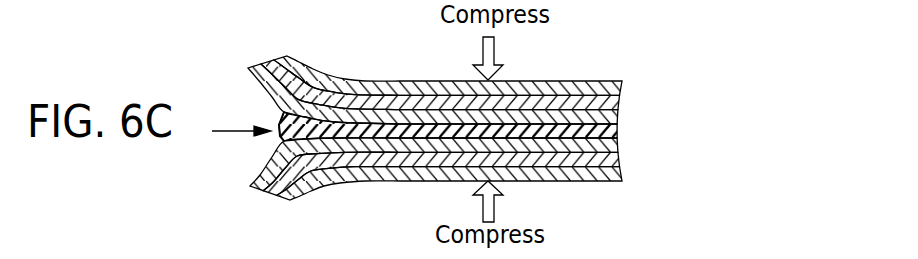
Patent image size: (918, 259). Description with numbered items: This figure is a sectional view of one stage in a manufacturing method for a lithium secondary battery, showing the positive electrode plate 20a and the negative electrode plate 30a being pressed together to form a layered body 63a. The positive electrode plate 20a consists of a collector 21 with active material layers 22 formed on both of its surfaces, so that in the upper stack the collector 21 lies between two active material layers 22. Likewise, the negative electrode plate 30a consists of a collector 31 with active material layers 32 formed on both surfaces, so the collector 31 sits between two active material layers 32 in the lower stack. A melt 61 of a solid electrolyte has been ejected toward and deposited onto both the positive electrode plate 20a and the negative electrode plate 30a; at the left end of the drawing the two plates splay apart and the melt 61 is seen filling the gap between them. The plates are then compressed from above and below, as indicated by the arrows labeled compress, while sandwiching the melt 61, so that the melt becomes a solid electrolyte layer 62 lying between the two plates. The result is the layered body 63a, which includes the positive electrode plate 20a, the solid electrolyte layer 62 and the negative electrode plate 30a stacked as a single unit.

The active material layers 22 is at (623, 88).
The collector 21 is at (621, 101).
The solid electrolyte layer 62 is at (617, 132).
The melt 61 is at (282, 121).
The active material layers 32 is at (617, 147).
The collector 31 is at (617, 161).
The positive electrode plate 20a is at (511, 90).
The negative electrode plate 30a is at (512, 167).
The layered body 63a is at (522, 128).